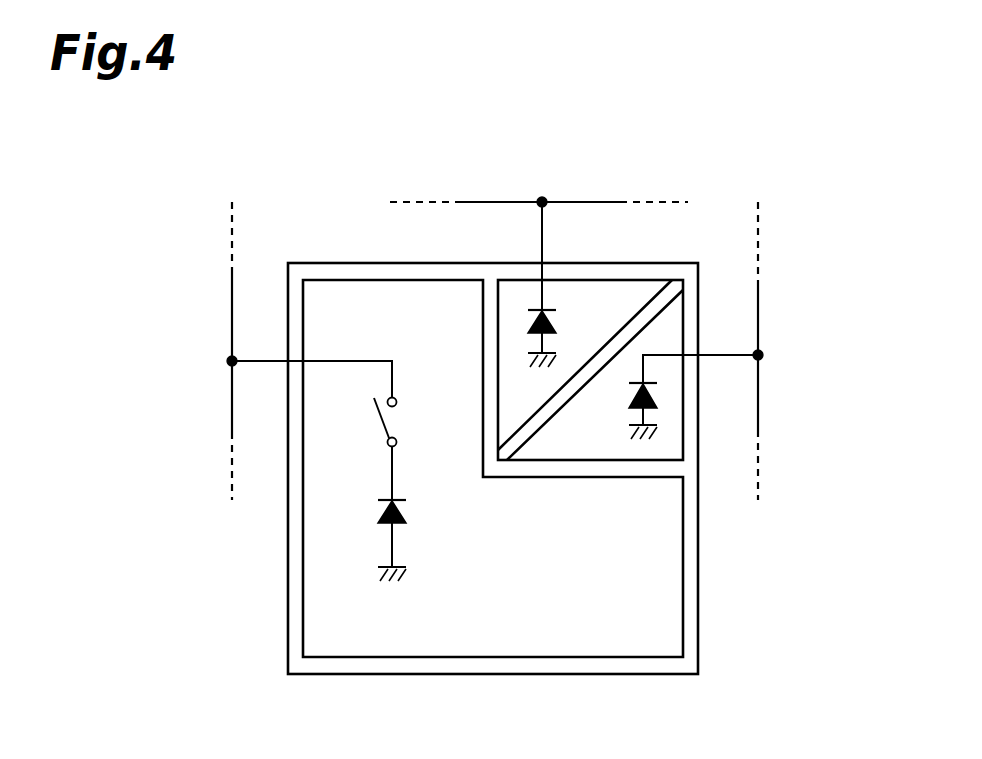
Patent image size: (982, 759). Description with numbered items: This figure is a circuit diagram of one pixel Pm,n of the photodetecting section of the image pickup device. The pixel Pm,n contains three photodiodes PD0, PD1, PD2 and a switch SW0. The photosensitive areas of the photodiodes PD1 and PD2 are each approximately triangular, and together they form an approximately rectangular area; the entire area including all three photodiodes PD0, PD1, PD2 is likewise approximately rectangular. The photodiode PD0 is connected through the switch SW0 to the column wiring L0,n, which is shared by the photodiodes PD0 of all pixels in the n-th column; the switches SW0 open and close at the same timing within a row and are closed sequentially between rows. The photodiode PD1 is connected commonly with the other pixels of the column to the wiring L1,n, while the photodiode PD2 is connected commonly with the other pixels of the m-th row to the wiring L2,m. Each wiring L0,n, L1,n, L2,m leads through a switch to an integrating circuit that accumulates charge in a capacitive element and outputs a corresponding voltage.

The pixel Pm,n is at (288, 598).
The wiring L0,n is at (232, 405).
The wiring L1,n is at (758, 392).
The wiring L2,m is at (588, 200).
The switch SW0 is at (422, 449).
The photodiode PD0 is at (421, 538).
The photodiode PD1 is at (607, 415).
The photodiode PD2 is at (573, 330).